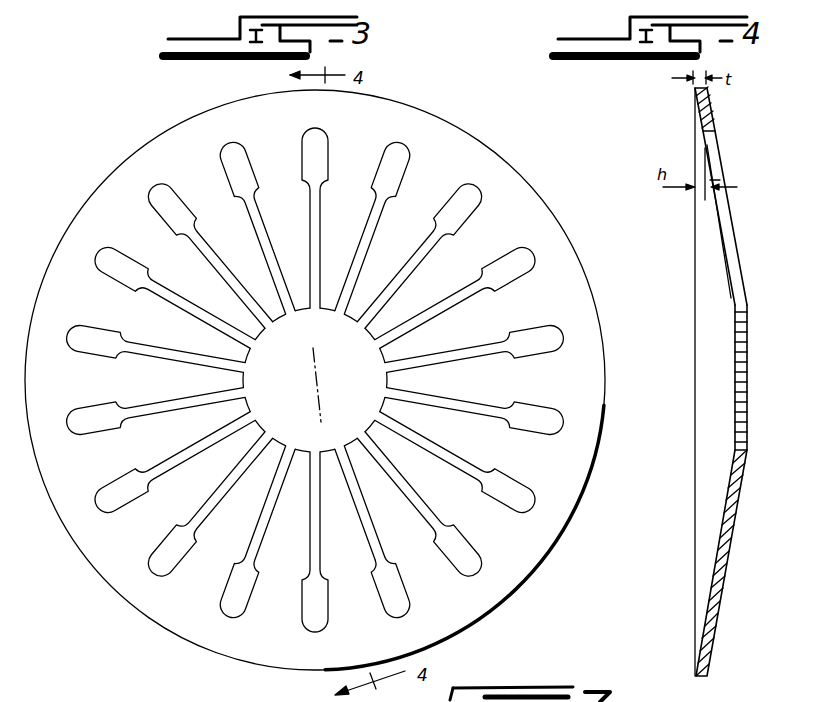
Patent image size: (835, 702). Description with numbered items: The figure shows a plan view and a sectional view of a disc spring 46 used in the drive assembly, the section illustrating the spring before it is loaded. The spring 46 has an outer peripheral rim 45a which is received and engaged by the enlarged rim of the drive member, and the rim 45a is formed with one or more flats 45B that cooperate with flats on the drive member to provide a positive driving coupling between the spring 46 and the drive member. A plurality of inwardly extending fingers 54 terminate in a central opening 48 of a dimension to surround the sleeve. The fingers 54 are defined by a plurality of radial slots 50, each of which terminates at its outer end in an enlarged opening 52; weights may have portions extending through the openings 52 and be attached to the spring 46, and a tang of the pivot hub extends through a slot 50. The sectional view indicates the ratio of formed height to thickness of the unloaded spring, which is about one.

In FIG. 3, the disc spring 46 is at (517, 192).
In FIG. 4, the disc spring 46 is at (713, 108).
In FIG. 3, the central opening 48 is at (345, 447).
In FIG. 4, the central opening 48 is at (745, 447).
In FIG. 3, the radial slot 50 is at (365, 511).
In FIG. 4, the radial slot 50 is at (728, 247).
In FIG. 3, the enlarged opening 52 is at (393, 583).
In FIG. 4, the enlarged opening 52 is at (713, 163).
In FIG. 3, the finger 54 is at (297, 447).
In FIG. 4, the finger 54 is at (727, 556).
In FIG. 3, the outer peripheral rim 45a is at (519, 596).
In FIG. 3, the flat 45B is at (198, 646).